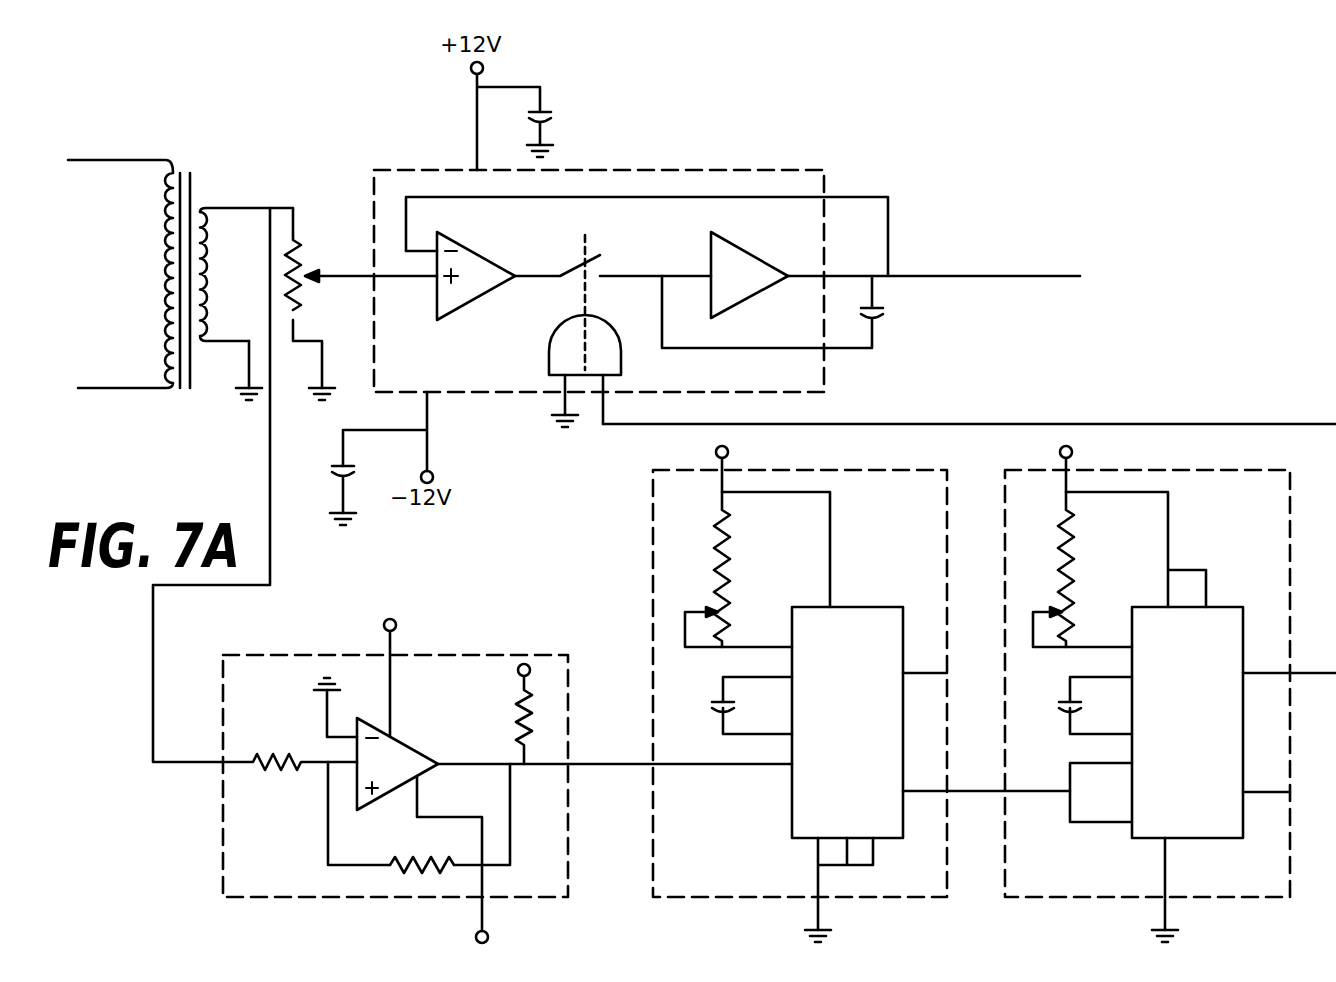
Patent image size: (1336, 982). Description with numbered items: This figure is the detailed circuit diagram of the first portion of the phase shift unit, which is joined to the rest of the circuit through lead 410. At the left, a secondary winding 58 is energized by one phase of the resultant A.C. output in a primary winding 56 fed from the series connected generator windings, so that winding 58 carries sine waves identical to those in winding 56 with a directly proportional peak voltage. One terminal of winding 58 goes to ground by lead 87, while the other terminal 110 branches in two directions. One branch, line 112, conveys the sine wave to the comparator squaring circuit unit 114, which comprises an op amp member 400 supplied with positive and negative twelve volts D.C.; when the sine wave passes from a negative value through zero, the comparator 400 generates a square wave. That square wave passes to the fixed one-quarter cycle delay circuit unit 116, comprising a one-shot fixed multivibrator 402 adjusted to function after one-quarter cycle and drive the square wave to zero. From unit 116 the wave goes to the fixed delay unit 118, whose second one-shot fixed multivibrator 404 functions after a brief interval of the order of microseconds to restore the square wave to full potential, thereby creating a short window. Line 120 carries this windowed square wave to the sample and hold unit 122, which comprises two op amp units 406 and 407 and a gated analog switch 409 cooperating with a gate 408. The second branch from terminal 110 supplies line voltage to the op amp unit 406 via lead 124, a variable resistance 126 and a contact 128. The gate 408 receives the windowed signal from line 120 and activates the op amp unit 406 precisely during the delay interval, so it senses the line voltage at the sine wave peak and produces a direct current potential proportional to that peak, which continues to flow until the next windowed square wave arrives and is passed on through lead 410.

The primary winding 56 is at (155, 226).
The secondary winding 58 is at (205, 218).
The lead 87 is at (247, 372).
The terminal 110 is at (243, 205).
The line 112 is at (268, 452).
The comparator squaring circuit unit 114 is at (297, 653).
The fixed one-quarter cycle delay circuit unit 116 is at (812, 472).
The fixed delay unit 118 is at (1152, 472).
The line 120 is at (945, 424).
The sample and hold unit 122 is at (688, 167).
The lead 124 is at (293, 208).
The variable resistance 126 is at (300, 303).
The contact 128 is at (355, 275).
The op amp member 400 is at (418, 750).
The one-shot fixed multivibrator 402 is at (790, 816).
The second one-shot fixed multivibrator 404 is at (1130, 842).
The op amp unit 406 is at (450, 320).
The op amp unit 407 is at (740, 256).
The gate 408 is at (628, 368).
The gated analog switch 409 is at (580, 265).
The lead 410 is at (985, 270).